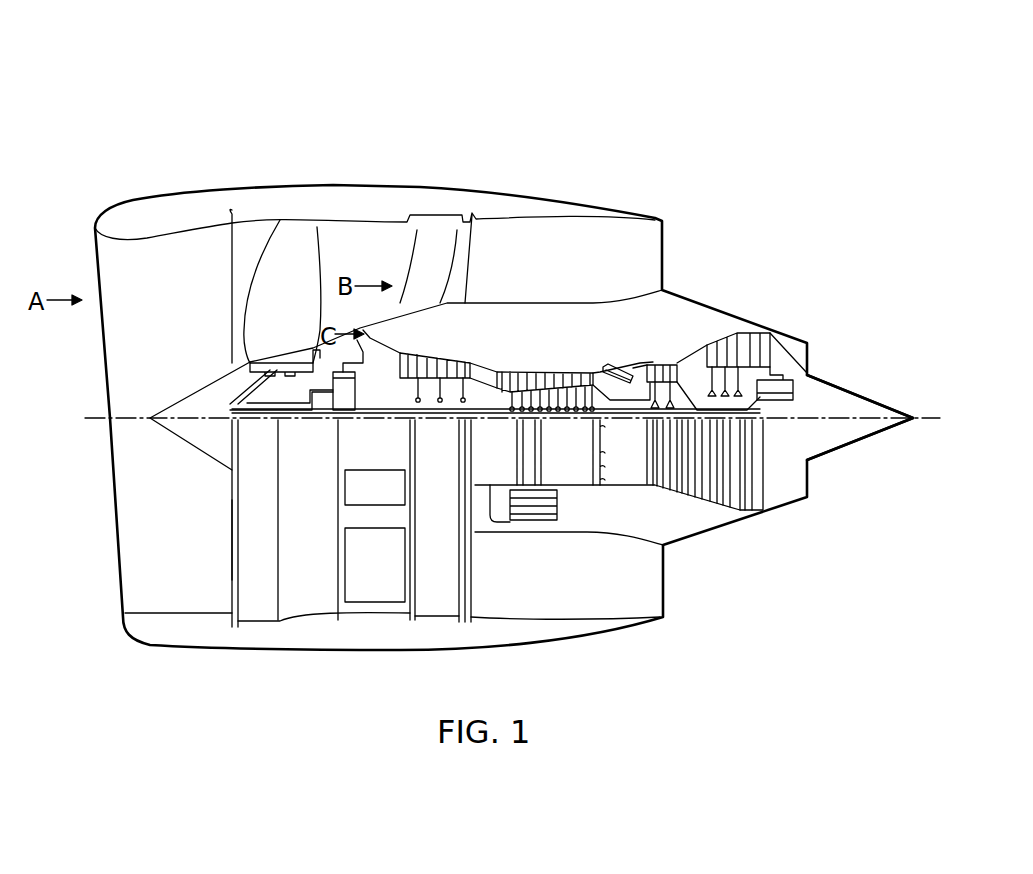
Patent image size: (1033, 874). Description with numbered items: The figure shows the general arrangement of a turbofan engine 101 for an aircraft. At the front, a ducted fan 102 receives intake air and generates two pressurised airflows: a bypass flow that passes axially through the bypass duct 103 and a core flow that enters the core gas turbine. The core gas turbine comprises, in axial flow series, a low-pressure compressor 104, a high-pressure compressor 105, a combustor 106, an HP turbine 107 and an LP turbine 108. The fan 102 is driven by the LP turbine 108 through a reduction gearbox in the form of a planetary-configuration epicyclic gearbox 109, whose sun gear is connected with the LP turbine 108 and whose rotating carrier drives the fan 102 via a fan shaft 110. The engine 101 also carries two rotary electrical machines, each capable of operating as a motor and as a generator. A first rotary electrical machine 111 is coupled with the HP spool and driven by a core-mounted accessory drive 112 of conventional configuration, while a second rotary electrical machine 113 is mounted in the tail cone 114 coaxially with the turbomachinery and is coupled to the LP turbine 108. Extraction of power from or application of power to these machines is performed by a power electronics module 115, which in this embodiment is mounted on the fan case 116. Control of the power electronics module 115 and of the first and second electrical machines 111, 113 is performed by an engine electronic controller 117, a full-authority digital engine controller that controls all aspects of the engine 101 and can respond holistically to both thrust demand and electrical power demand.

The engine 101 is at (139, 143).
The ducted fan 102 is at (302, 324).
The bypass duct 103 is at (395, 266).
The low-pressure compressor 104 is at (446, 346).
The high-pressure compressor 105 is at (542, 364).
The combustor 106 is at (620, 361).
The HP turbine 107 is at (666, 355).
The LP turbine 108 is at (727, 336).
The epicyclic gearbox 109 is at (361, 389).
The fan shaft 110 is at (283, 410).
The first rotary electrical machine 111 is at (557, 512).
The core-mounted accessory drive 112 is at (498, 497).
The second rotary electrical machine 113 is at (787, 380).
The tail cone 114 is at (893, 372).
The power electronics module 115 is at (345, 556).
The fan case 116 is at (250, 542).
The engine electronic controller 117 is at (345, 493).